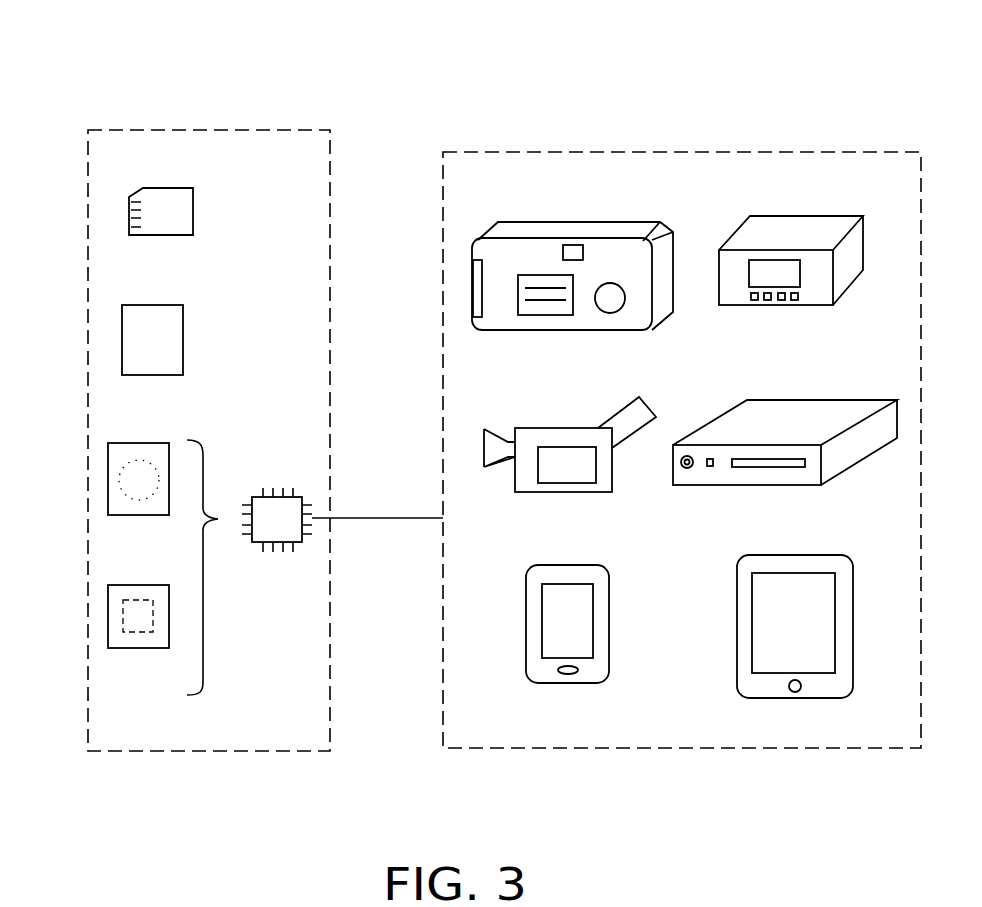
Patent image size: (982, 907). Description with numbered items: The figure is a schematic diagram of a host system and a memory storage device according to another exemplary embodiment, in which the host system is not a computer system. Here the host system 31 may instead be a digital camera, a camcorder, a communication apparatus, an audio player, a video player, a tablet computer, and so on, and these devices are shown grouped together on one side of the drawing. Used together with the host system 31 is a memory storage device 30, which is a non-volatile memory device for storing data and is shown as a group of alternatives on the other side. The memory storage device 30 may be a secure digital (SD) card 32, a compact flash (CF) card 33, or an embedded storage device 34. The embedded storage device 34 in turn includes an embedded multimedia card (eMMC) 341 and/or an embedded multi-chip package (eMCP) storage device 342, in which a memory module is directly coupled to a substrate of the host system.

The memory storage device 30 is at (198, 128).
The host system 31 is at (606, 150).
The secure digital (SD) card 32 is at (129, 217).
The compact flash (CF) card 33 is at (122, 342).
The embedded storage device 34 is at (277, 490).
The embedded multimedia card (eMMC) 341 is at (108, 481).
The embedded multi-chip package (eMCP) storage device 342 is at (108, 618).